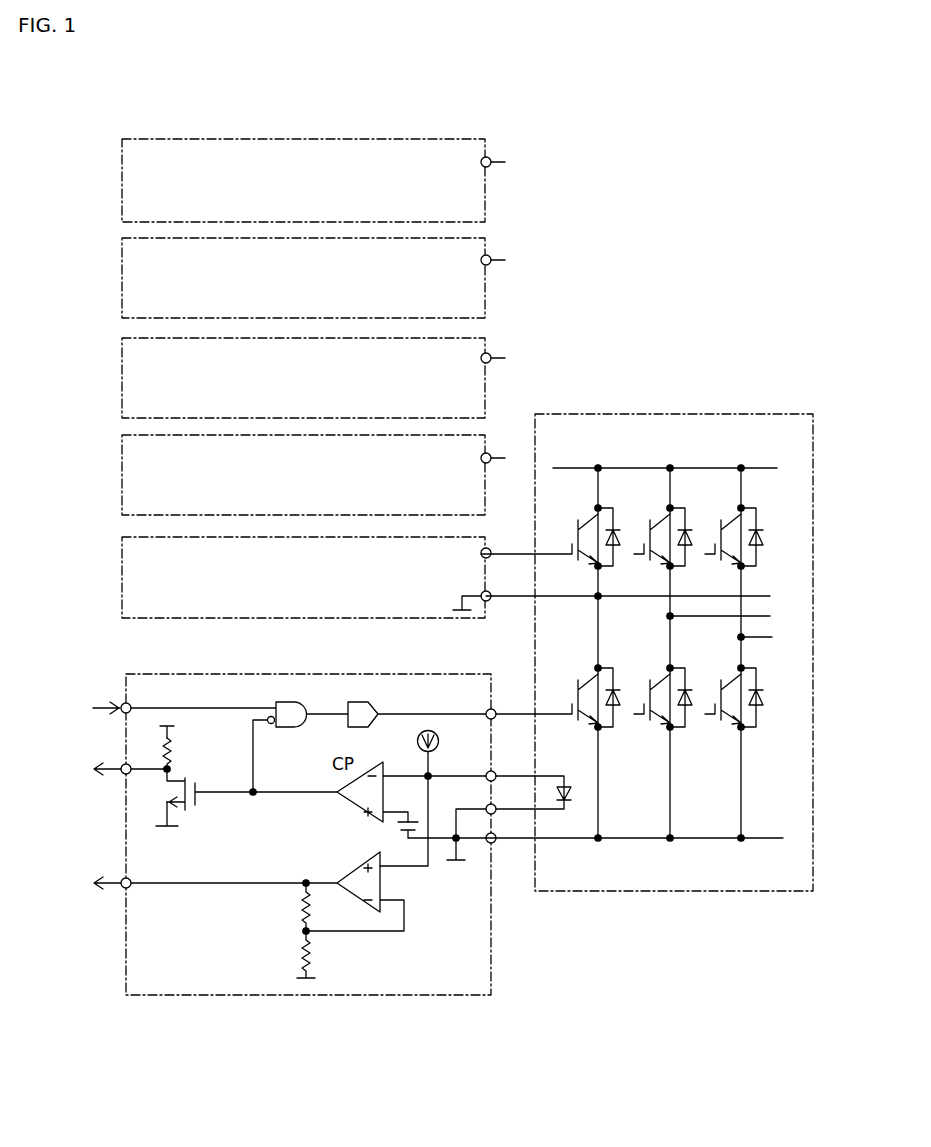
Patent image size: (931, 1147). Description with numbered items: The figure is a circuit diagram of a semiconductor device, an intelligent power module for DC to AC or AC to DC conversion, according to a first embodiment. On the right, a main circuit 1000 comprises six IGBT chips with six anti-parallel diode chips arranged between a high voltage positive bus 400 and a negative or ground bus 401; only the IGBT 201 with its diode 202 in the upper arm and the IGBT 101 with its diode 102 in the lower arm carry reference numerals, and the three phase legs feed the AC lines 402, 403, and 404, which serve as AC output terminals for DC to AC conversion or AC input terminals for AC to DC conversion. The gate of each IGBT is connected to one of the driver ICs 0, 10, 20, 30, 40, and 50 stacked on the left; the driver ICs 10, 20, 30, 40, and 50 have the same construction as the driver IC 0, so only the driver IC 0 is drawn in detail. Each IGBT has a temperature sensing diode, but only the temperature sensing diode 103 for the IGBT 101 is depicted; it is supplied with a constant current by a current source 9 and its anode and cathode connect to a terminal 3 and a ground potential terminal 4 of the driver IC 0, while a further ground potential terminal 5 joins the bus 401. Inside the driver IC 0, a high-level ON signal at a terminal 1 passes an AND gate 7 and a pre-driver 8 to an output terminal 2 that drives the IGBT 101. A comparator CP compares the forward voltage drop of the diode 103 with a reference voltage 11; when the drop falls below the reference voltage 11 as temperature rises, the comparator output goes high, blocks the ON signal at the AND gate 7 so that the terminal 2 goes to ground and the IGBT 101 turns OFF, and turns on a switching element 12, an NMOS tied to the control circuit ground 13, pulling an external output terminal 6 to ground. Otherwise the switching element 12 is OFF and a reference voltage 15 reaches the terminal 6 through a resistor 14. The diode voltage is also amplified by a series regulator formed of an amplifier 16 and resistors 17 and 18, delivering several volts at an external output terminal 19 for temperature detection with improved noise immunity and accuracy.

The driver IC 0 is at (126, 674).
The input terminal 1 is at (112, 700).
The output terminal 2 is at (497, 704).
The terminal for detecting the voltage across a temperature sensing diode 3 is at (468, 767).
The ground potential terminal 4 is at (482, 812).
The ground potential terminal 5 is at (482, 847).
The external output terminal for detecting overheat protection operation 6 is at (112, 760).
The AND gate 7 is at (218, 738).
The pre-driver 8 is at (396, 704).
The current source 9 is at (417, 799).
The driver IC 10 is at (122, 578).
The reference voltage 11 is at (425, 841).
The switching element 12 is at (210, 797).
The ground of a control circuit 13 is at (172, 827).
The resistor 14 is at (165, 755).
The reference voltage 15 is at (179, 725).
The amplifier 16 is at (267, 890).
The resistor 17 is at (291, 908).
The resistor 18 is at (316, 954).
The external output terminal for temperature detection 19 is at (112, 872).
The driver IC 20 is at (122, 480).
The driver IC 30 is at (122, 382).
The driver IC 40 is at (122, 282).
The driver IC 50 is at (122, 182).
The IGBT 101 is at (548, 693).
The diode 102 is at (622, 697).
The temperature sensing diode 103 is at (540, 781).
The IGBT 201 is at (541, 533).
The diode 202 is at (623, 536).
The high voltage bus 400 is at (690, 468).
The low voltage bus 401 is at (700, 843).
The AC line 402 is at (754, 594).
The AC line 403 is at (764, 616).
The AC line 404 is at (767, 641).
The main circuit 1000 is at (606, 412).